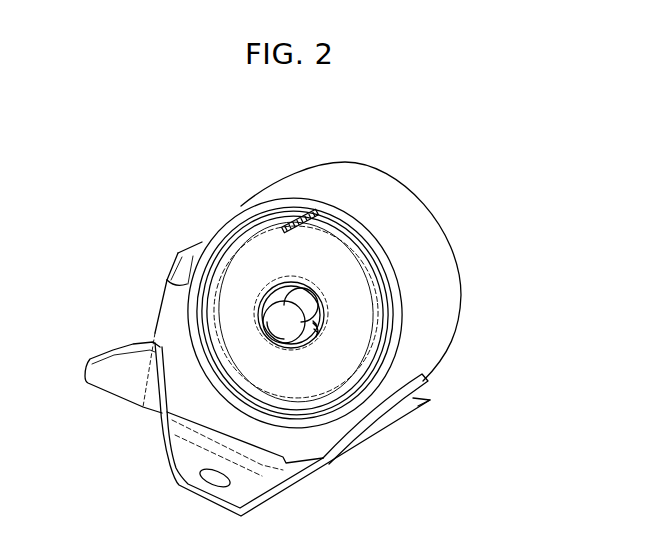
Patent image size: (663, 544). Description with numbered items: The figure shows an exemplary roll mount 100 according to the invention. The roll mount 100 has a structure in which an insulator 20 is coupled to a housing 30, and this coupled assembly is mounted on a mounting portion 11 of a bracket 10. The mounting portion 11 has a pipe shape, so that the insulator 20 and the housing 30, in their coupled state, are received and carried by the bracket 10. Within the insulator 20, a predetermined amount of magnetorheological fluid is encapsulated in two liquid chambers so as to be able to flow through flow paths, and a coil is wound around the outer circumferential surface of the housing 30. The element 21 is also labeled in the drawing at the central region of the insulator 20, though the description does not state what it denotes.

The roll mount 100 is at (433, 180).
The bracket 10 is at (173, 322).
The mounting portion 11 is at (242, 205).
The insulator 20 is at (352, 350).
The bolt / core 21 is at (300, 317).
The housing 30 is at (393, 322).